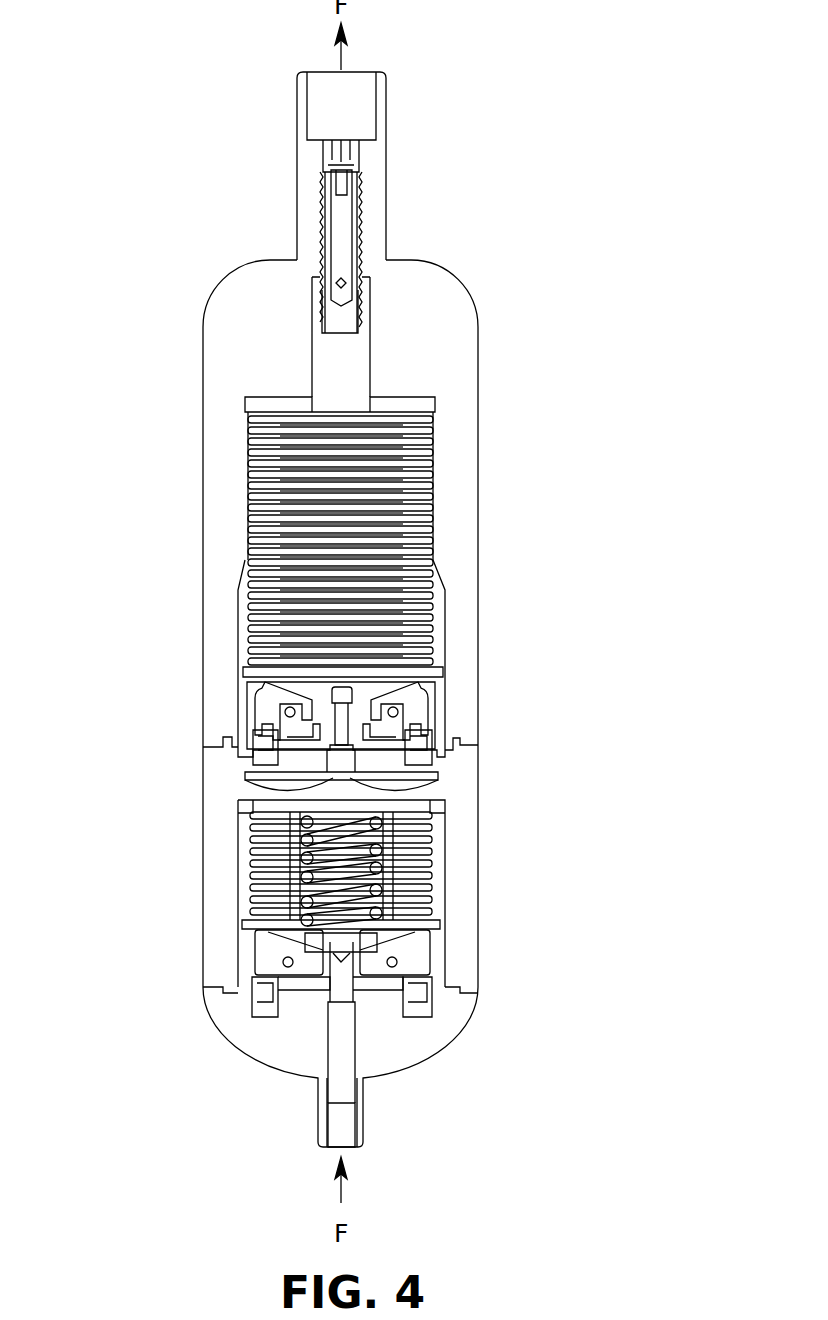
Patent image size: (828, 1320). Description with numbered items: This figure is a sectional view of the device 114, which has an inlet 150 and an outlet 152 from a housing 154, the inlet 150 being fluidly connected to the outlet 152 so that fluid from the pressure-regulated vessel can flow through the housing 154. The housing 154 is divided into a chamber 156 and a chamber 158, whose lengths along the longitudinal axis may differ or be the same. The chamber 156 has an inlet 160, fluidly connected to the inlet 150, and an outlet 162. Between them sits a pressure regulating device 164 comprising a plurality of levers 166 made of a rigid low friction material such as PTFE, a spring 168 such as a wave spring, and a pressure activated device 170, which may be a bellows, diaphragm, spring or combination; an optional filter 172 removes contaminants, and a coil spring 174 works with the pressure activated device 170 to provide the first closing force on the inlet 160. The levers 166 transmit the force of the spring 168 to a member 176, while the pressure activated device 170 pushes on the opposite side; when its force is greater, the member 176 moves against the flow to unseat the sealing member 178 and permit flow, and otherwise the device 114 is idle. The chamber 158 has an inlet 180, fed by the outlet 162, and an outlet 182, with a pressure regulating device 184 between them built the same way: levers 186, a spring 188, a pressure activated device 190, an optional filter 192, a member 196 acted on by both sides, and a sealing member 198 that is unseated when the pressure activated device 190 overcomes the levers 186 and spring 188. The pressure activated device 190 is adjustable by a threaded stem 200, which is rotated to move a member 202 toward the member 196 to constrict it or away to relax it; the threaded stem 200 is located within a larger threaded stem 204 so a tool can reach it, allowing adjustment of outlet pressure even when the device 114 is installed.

The device 114 is at (568, 94).
The inlet 150 is at (363, 1135).
The outlet 152 is at (386, 100).
The housing 154 is at (479, 317).
The chamber 156 is at (201, 793).
The chamber 158 is at (479, 470).
The inlet 160 is at (353, 1028).
The outlet 162 is at (438, 783).
The pressure regulating device 164 is at (200, 890).
The levers 166 is at (432, 952).
The spring 168 is at (432, 988).
The pressure activated device 170 is at (433, 837).
The filter 172 is at (330, 1003).
The spring 174 is at (383, 868).
The member 176 is at (434, 926).
The sealing member 178 is at (310, 942).
The inlet 180 is at (323, 788).
The outlet 182 is at (297, 104).
The pressure regulating device 184 is at (200, 505).
The levers 186 is at (260, 695).
The spring 188 is at (267, 743).
The pressure activated device 190 is at (434, 540).
The filter 192 is at (330, 753).
The member 196 is at (438, 687).
The sealing member 198 is at (378, 692).
The threaded stem 200 is at (345, 240).
The member 202 is at (436, 407).
The larger threaded stem 204 is at (362, 181).